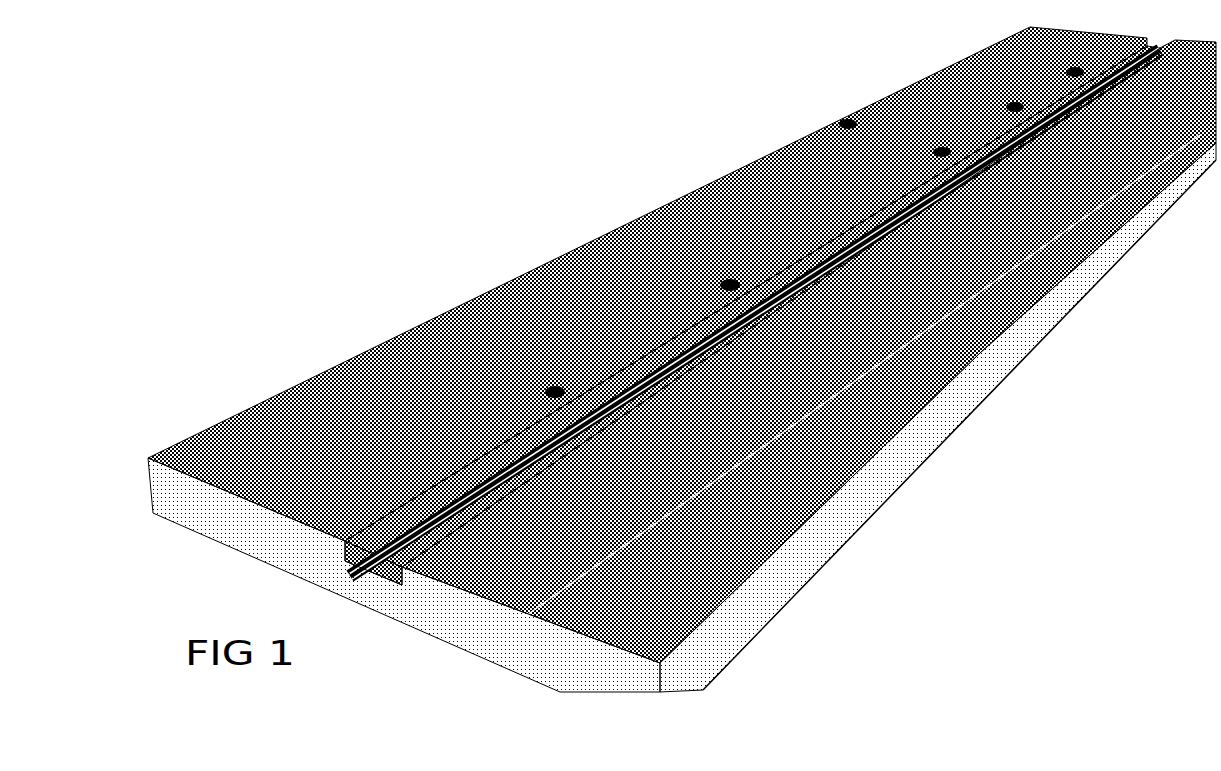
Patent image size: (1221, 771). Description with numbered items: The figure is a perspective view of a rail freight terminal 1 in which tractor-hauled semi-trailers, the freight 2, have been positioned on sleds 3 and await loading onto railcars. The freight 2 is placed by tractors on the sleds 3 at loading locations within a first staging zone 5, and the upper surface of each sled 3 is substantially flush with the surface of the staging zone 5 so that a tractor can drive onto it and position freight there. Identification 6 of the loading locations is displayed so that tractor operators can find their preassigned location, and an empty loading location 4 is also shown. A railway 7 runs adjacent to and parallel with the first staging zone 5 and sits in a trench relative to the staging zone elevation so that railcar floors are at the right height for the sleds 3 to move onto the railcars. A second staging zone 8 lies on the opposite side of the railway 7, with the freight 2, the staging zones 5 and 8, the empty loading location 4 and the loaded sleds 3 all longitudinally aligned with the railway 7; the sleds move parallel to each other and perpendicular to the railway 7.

The rail freight terminal 1 is at (682, 359).
The freight 2 is at (743, 165).
The sled 3 is at (850, 530).
The empty loading location 4 is at (948, 433).
The first staging zone 5 is at (837, 120).
The identification of loading locations 6 is at (955, 348).
The railway 7 is at (888, 493).
The second staging zone 8 is at (773, 613).